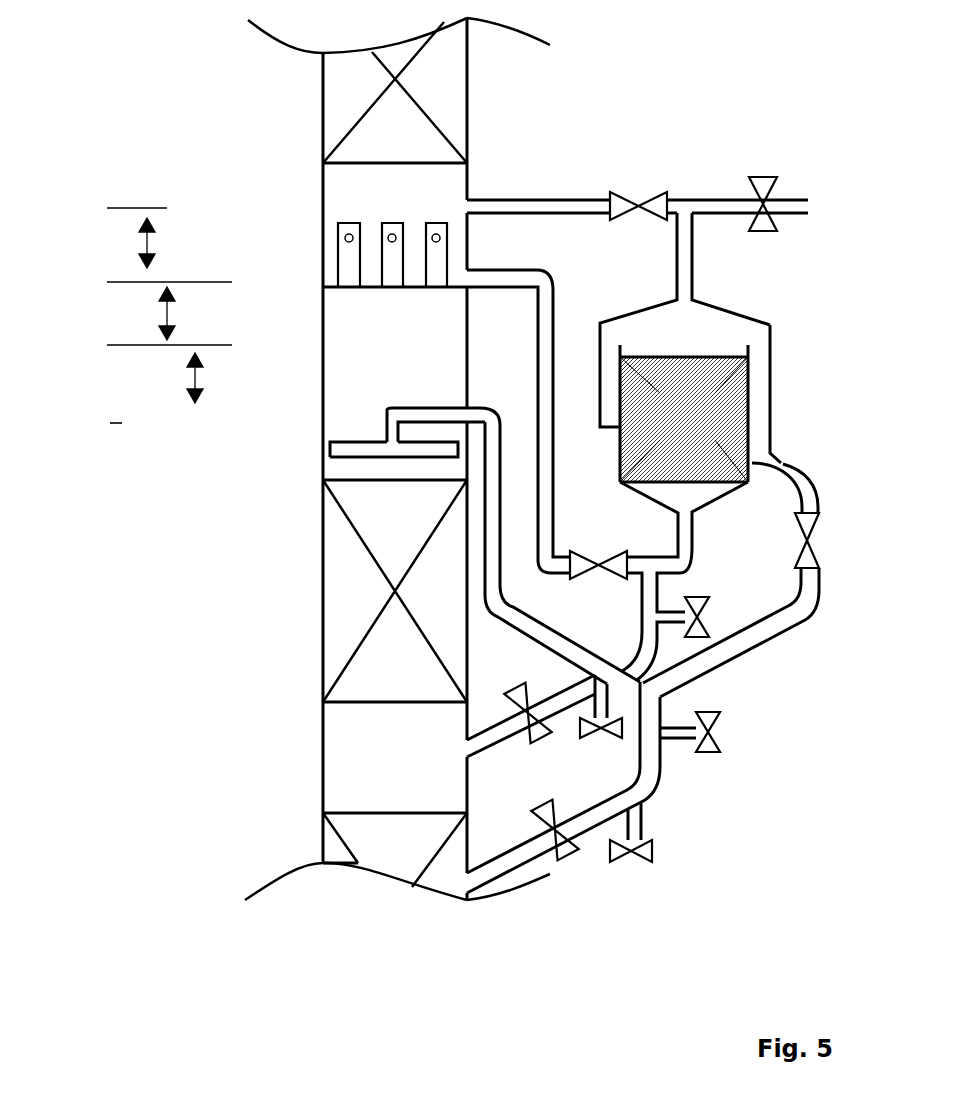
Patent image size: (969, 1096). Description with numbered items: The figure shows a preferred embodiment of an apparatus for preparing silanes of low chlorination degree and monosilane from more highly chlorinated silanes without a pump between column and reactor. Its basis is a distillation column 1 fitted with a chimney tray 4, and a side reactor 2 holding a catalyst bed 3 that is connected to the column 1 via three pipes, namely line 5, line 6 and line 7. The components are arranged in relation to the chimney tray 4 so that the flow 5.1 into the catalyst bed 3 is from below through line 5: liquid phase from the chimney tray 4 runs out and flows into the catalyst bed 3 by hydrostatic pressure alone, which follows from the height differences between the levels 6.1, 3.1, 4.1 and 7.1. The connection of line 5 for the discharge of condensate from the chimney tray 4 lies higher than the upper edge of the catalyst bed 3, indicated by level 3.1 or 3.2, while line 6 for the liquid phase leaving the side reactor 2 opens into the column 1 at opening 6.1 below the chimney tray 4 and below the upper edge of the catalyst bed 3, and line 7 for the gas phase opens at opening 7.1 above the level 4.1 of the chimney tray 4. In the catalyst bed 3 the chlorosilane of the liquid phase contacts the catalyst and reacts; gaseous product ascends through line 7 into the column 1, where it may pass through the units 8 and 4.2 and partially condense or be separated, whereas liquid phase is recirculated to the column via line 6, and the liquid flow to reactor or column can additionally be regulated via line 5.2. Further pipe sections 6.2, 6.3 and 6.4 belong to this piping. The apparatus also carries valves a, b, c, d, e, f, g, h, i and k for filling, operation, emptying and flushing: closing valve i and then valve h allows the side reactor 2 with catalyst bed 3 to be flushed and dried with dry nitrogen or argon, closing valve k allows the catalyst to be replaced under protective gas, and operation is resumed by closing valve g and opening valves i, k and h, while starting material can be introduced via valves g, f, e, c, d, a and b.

The distillation column 1 is at (323, 748).
The side reactor 2 is at (685, 320).
The catalyst bed 3 is at (684, 413).
The upper edge of the catalyst bed 3.1 is at (129, 364).
The upper edge of the catalyst bed 3.2 is at (752, 347).
The chimney tray 4 is at (323, 287).
The level of the chimney tray 4.1 is at (129, 299).
The units 4.2 is at (432, 232).
The line 5 is at (553, 325).
The flow to the catalyst bed 5.1 is at (687, 581).
The line 5.2 is at (500, 742).
The line 6 is at (562, 553).
The opening of line 6 6.1 is at (76, 423).
The side outlet pipe 6.2 is at (744, 561).
The internal collector 6.3 is at (415, 411).
The lower pipe 6.4 is at (655, 790).
The line 7 is at (507, 200).
The opening of line 7 7.1 is at (97, 229).
The units 8 is at (395, 454).
The valve a is at (564, 849).
The valve b is at (520, 697).
The valve c is at (605, 726).
The valve d is at (645, 851).
The valve e is at (708, 751).
The valve f is at (712, 601).
The valve g is at (782, 218).
The valve h is at (598, 547).
The valve i is at (638, 190).
The valve k is at (822, 540).